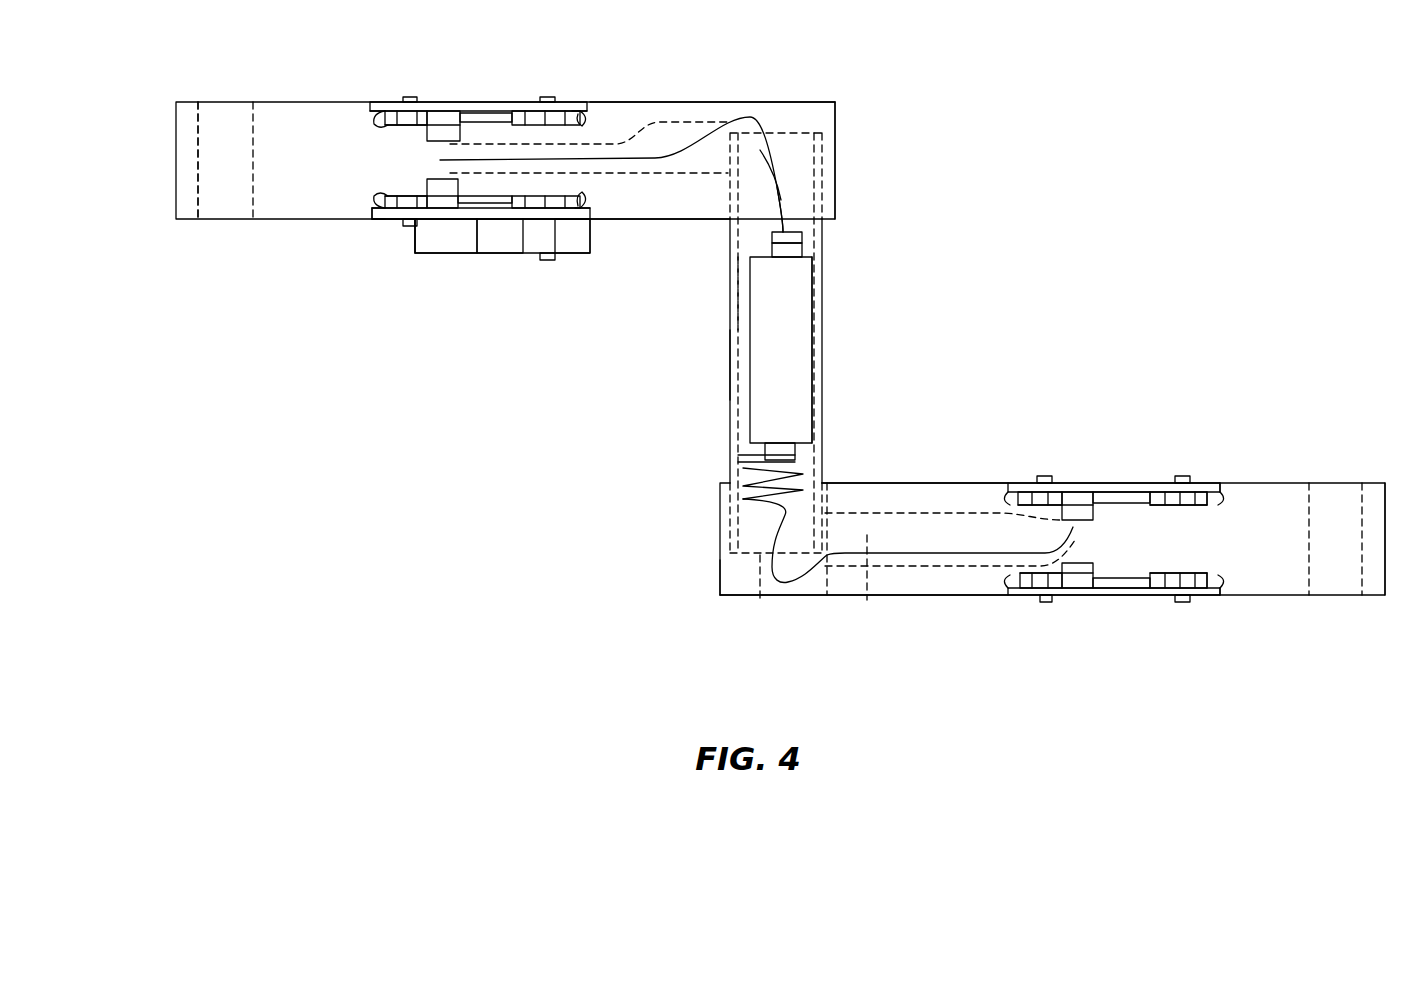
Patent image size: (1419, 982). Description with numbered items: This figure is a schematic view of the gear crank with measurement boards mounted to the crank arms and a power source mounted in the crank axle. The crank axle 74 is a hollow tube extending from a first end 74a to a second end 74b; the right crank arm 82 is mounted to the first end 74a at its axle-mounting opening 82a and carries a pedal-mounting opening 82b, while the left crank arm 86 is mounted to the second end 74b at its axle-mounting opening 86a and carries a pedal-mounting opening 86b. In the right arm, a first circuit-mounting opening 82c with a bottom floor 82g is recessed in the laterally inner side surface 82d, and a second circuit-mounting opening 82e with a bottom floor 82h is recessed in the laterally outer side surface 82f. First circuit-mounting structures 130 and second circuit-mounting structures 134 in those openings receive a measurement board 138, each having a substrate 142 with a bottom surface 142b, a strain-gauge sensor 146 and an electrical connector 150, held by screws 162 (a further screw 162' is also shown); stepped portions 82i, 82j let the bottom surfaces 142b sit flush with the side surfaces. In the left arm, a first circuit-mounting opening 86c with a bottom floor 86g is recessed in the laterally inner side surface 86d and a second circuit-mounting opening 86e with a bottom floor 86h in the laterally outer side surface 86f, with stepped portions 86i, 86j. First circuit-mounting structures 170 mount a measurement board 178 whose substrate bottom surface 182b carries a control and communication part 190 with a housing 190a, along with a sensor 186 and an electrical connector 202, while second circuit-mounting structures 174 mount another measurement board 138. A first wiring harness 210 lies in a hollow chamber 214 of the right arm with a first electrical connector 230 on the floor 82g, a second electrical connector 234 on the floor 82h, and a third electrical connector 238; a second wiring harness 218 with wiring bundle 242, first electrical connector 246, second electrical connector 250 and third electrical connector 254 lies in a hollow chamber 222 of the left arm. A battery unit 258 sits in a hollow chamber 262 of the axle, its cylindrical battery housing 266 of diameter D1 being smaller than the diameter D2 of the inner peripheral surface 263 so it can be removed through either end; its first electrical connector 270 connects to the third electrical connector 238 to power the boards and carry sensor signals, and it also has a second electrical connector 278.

The crank axle 74 is at (730, 400).
The first end of crank axle 74a is at (760, 598).
The second end of crank axle 74b is at (790, 130).
The right crank arm 82 is at (1300, 482).
The axle-mounting opening 82a is at (735, 597).
The pedal-mounting opening 82b is at (1312, 567).
The first circuit-mounting opening 82c is at (1208, 505).
The laterally inner side surface 82d is at (855, 482).
The second circuit-mounting opening 82e is at (1208, 582).
The laterally outer side surface 82f is at (807, 597).
The bottom floor 82g is at (1170, 490).
The bottom floor 82h is at (1160, 600).
The stepped portion 82i is at (1002, 497).
The stepped portion 82j is at (1005, 578).
The left crank arm 86 is at (178, 152).
The axle-mounting opening 86a is at (825, 110).
The pedal-mounting opening 86b is at (253, 118).
The first circuit-mounting opening 86c is at (393, 200).
The laterally inner side surface 86d is at (675, 220).
The second circuit-mounting opening 86e is at (392, 123).
The laterally outer side surface 86f is at (697, 102).
The bottom floor 86g is at (520, 228).
The bottom floor 86h is at (528, 113).
The stepped portion 86i is at (385, 208).
The stepped portion 86j is at (378, 123).
The first circuit-mounting structures 130 is at (1030, 500).
The second circuit-mounting structures 134 is at (1073, 542).
The measurement board 138 is at (458, 92).
The substrate 142 is at (1195, 493).
The bottom surface of substrate 142b is at (385, 110).
The sensor 146 is at (482, 115).
The electrical connector 150 is at (440, 110).
The screws 162 is at (807, 351).
The fastener 162' is at (556, 280).
The first circuit-mounting structures 170 is at (407, 205).
The second circuit-mounting structures 174 is at (398, 116).
The measurement board 178 is at (352, 270).
The bottom surface of substrate 182b is at (378, 222).
The sensor 186 is at (477, 230).
The control and communication part 190 is at (440, 240).
The housing 190a is at (570, 236).
The electrical connector 202 is at (433, 207).
The first wiring harness 210 is at (748, 524).
The hollow chamber 214 is at (867, 600).
The second wiring harness 218 is at (805, 171).
The hollow chamber 222 is at (633, 135).
The first electrical connector 230 is at (1062, 505).
The second electrical connector 234 is at (1150, 555).
The third electrical connector 238 is at (768, 462).
The wiring bundle 242 is at (783, 200).
The first electrical connector 246 is at (437, 190).
The second electrical connector 250 is at (437, 138).
The third electrical connector 254 is at (795, 236).
The battery unit 258 is at (800, 325).
The hollow chamber 262 is at (730, 353).
The inner peripheral surface 263 is at (735, 285).
The battery housing 266 is at (790, 367).
The first electrical connector 270 is at (765, 452).
The second electrical connector 278 is at (795, 251).
The diameter of battery housing D1 is at (752, 293).
The diameter of inner peripheral surface D2 is at (804, 187).